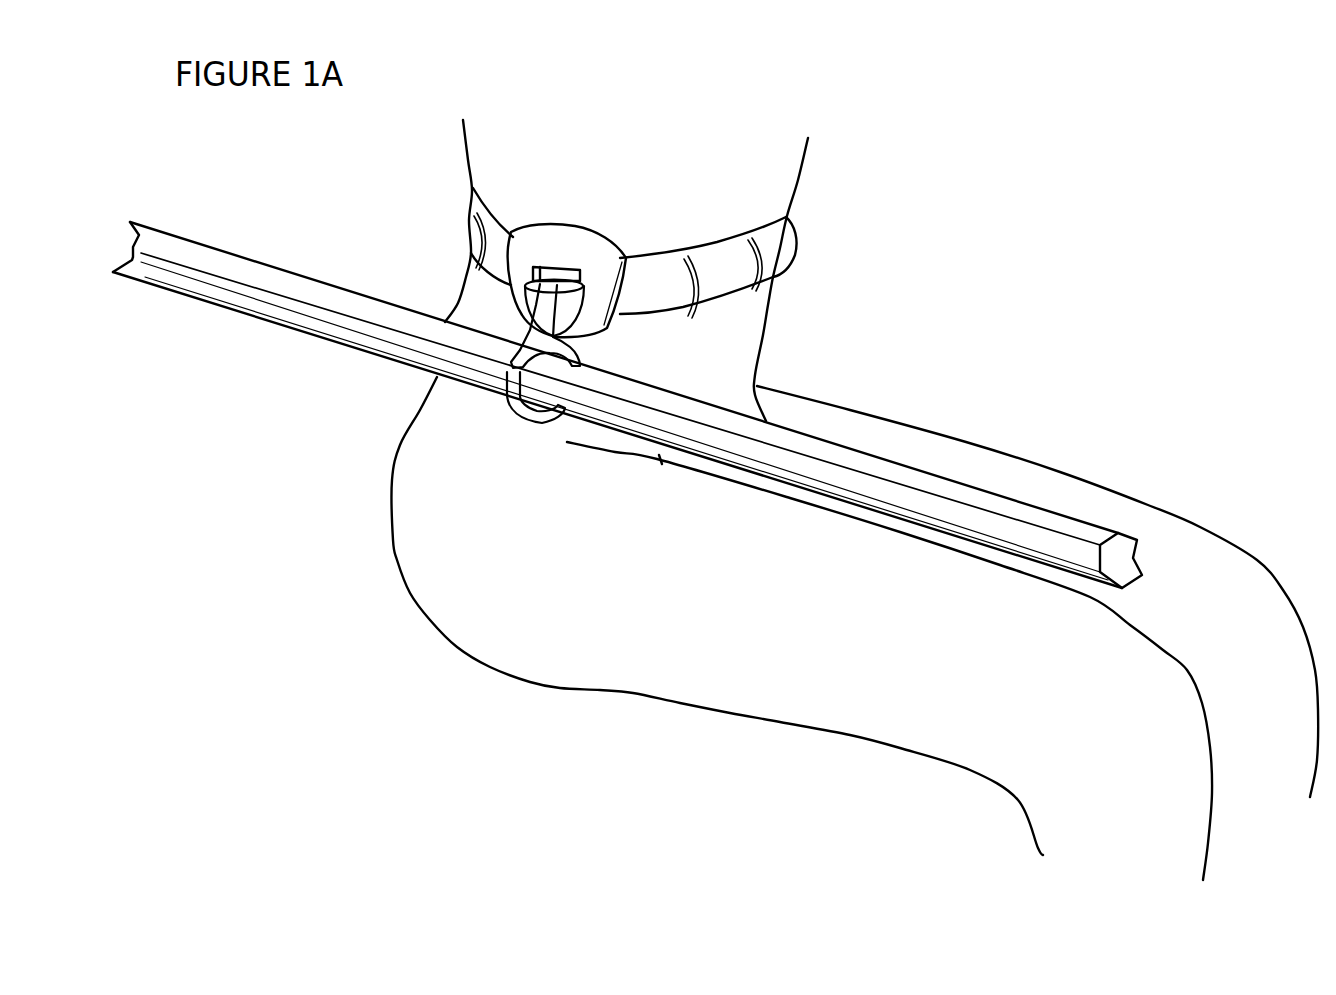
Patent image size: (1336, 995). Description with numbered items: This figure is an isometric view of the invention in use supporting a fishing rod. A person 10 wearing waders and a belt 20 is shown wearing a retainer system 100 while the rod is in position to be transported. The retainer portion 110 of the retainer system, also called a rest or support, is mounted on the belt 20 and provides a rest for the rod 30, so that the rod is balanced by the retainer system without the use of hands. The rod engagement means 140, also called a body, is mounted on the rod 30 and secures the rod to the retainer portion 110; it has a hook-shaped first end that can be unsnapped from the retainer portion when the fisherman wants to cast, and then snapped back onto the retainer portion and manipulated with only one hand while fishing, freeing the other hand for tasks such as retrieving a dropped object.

The person 10 is at (968, 443).
The belt 20 is at (793, 243).
The rod 30 is at (297, 335).
The retainer system 100 is at (557, 243).
The retainer portion 110 is at (527, 303).
The rod engagement means 140 is at (543, 333).